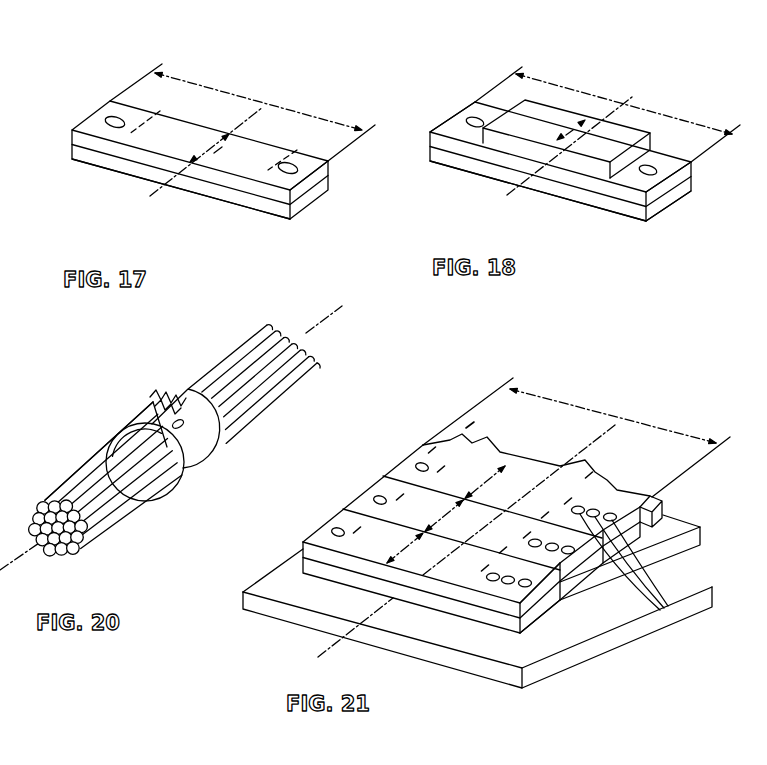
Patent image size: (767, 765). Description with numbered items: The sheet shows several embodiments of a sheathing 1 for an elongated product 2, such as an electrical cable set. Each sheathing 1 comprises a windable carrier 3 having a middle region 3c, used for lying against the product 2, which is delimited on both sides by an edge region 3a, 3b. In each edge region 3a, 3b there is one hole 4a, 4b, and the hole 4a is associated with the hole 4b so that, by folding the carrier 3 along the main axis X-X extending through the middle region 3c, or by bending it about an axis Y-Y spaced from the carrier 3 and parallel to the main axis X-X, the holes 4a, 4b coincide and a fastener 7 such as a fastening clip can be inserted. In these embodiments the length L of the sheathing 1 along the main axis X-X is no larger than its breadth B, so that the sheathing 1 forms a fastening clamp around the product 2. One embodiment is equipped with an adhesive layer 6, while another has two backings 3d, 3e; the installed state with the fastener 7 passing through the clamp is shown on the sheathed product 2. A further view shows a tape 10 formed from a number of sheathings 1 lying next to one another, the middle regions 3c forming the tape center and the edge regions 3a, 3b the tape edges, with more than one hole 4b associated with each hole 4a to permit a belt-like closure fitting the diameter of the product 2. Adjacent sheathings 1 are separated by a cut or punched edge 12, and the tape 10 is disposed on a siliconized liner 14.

In FIG. 17, the sheathing 1 is at (187, 203).
In FIG. 18, the sheathing 1 is at (552, 210).
In FIG. 20, the sheathing 1 is at (147, 390).
In FIG. 21, the sheathing 1 is at (312, 527).
In FIG. 20, the elongated product 2 is at (120, 490).
In FIG. 17, the carrier 3 is at (88, 157).
In FIG. 18, the carrier 3 is at (460, 177).
In FIG. 20, the carrier 3 is at (182, 470).
In FIG. 21, the carrier 3 is at (550, 603).
In FIG. 17, the edge region 3a is at (117, 100).
In FIG. 18, the edge region 3a is at (479, 104).
In FIG. 21, the edge region 3a is at (437, 517).
In FIG. 17, the edge region 3b is at (267, 168).
In FIG. 18, the edge region 3b is at (631, 172).
In FIG. 21, the edge region 3b is at (596, 503).
In FIG. 17, the middle region 3c is at (193, 137).
In FIG. 18, the middle region 3c is at (563, 120).
In FIG. 21, the middle region 3c is at (510, 488).
In FIG. 18, the backing 3d is at (640, 213).
In FIG. 18, the backing 3e is at (567, 160).
In FIG. 17, the hole 4a is at (105, 121).
In FIG. 18, the hole 4a is at (466, 121).
In FIG. 21, the hole 4a is at (414, 469).
In FIG. 17, the hole 4b is at (310, 160).
In FIG. 18, the hole 4b is at (657, 162).
In FIG. 21, the hole 4b is at (583, 570).
In FIG. 17, the adhesive layer 6 is at (320, 165).
In FIG. 20, the fastener 7 is at (178, 386).
In FIG. 21, the tape 10 is at (697, 617).
In FIG. 21, the cut or punched edge 12 is at (468, 492).
In FIG. 21, the siliconized liner 14 is at (684, 522).
In FIG. 17, the length L is at (222, 147).
In FIG. 18, the length L is at (573, 130).
In FIG. 21, the length L is at (483, 440).
In FIG. 17, the breadth B is at (310, 112).
In FIG. 18, the breadth B is at (667, 112).
In FIG. 21, the breadth B is at (615, 416).
In FIG. 17, the main axis X is at (281, 96).
In FIG. 18, the main axis X is at (637, 94).
In FIG. 21, the main axis X is at (601, 437).
In FIG. 20, the axis Y is at (331, 319).